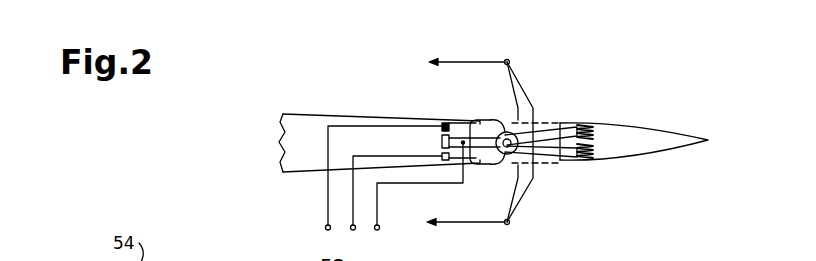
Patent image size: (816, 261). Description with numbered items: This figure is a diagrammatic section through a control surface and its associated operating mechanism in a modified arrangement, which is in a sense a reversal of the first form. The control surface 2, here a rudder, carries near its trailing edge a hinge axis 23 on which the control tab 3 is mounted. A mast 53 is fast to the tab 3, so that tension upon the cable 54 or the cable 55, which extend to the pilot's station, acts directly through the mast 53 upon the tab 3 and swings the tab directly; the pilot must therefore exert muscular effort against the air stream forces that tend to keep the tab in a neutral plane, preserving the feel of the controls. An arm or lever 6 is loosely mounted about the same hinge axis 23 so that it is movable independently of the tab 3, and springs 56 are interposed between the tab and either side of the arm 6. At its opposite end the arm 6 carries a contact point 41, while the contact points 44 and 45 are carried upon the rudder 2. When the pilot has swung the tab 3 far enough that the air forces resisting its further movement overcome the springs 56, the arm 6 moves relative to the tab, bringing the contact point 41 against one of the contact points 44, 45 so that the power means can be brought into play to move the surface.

The control surface 2 is at (302, 122).
The control tab 3 is at (672, 136).
The arm 6 is at (544, 144).
The hinge axis 23 is at (507, 139).
The contact point 41 is at (442, 141).
The contact point 44 is at (443, 158).
The contact point 45 is at (443, 125).
The mast 53 is at (522, 98).
The cable 54 is at (455, 62).
The cable 55 is at (455, 222).
The springs 56 is at (594, 148).